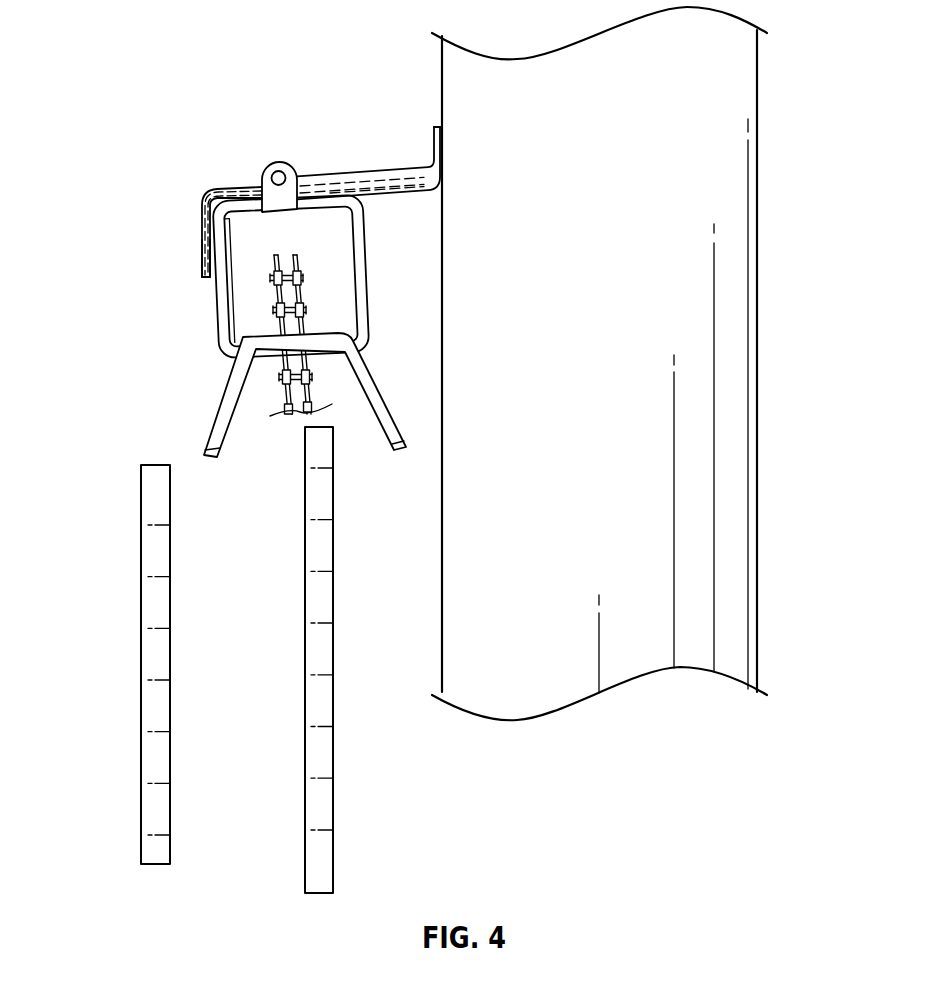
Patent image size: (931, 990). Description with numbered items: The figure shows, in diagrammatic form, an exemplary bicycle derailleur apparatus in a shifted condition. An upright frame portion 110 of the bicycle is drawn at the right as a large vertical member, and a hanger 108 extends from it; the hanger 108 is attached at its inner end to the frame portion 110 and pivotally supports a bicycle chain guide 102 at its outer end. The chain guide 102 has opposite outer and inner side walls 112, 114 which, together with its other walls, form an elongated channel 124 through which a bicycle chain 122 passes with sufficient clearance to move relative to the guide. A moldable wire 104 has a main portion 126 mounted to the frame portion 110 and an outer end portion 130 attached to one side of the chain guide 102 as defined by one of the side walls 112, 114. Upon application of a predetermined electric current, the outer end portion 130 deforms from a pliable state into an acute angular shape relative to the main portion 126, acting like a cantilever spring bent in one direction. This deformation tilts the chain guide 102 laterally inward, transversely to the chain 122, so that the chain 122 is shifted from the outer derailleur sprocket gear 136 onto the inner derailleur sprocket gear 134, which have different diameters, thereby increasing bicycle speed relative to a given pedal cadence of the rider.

The bicycle chain guide 102 is at (184, 298).
The moldable wire 104 is at (221, 187).
The hanger 108 is at (318, 172).
The upright frame portion 110 is at (758, 288).
The outer side wall 112 is at (219, 343).
The inner side wall 114 is at (364, 248).
The bicycle chain 122 is at (310, 305).
The elongated channel 124 is at (244, 231).
The main portion 126 is at (360, 188).
The outer end portion 130 is at (204, 252).
The inner derailleur sprocket gear 134 is at (336, 846).
The outer derailleur sprocket gear 136 is at (140, 699).